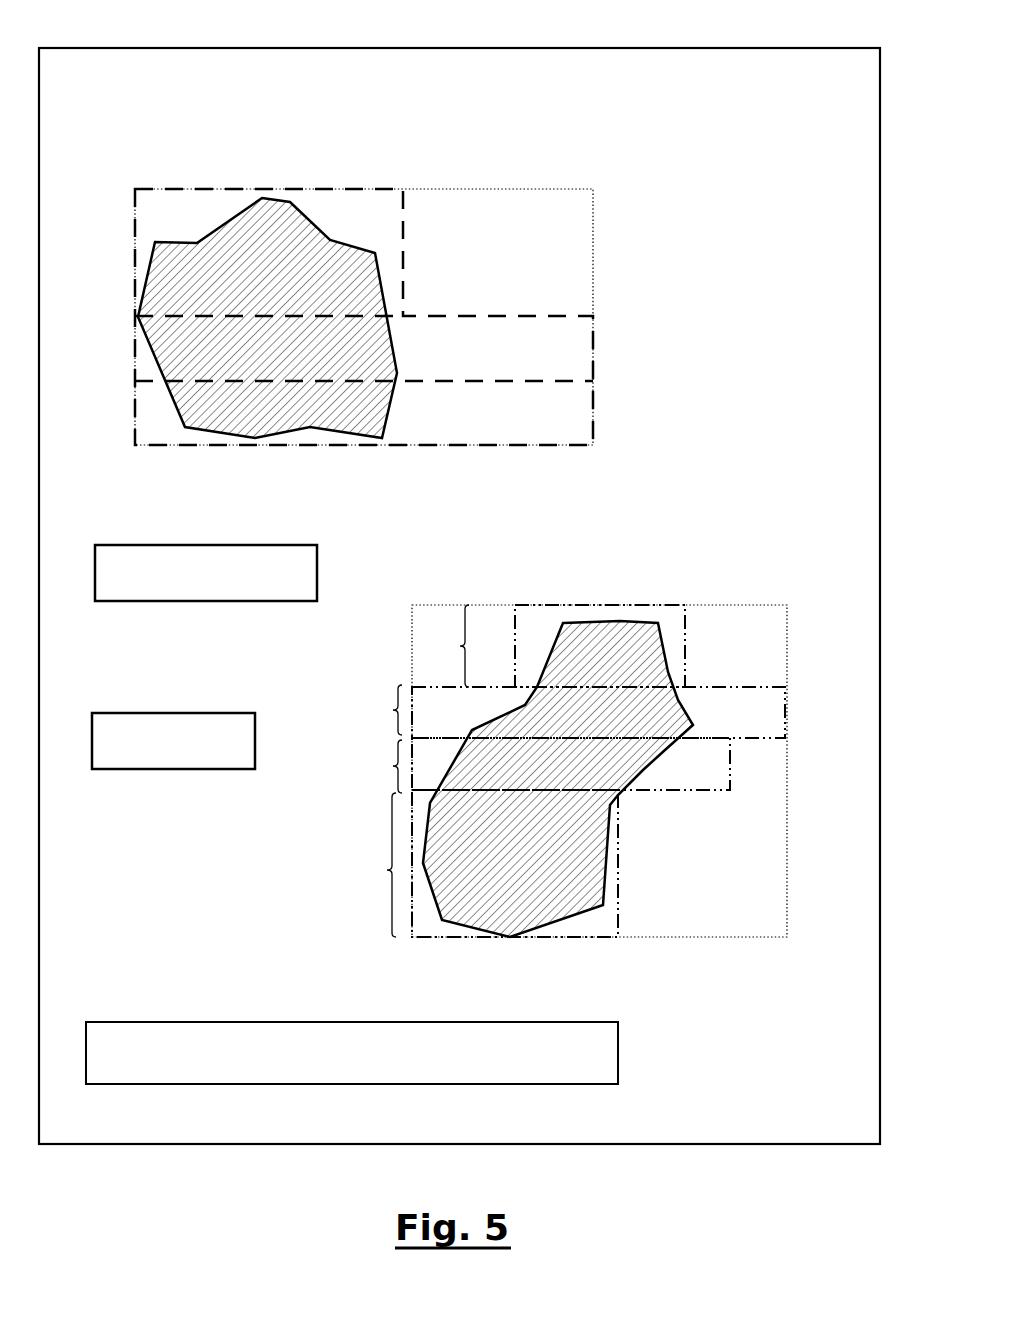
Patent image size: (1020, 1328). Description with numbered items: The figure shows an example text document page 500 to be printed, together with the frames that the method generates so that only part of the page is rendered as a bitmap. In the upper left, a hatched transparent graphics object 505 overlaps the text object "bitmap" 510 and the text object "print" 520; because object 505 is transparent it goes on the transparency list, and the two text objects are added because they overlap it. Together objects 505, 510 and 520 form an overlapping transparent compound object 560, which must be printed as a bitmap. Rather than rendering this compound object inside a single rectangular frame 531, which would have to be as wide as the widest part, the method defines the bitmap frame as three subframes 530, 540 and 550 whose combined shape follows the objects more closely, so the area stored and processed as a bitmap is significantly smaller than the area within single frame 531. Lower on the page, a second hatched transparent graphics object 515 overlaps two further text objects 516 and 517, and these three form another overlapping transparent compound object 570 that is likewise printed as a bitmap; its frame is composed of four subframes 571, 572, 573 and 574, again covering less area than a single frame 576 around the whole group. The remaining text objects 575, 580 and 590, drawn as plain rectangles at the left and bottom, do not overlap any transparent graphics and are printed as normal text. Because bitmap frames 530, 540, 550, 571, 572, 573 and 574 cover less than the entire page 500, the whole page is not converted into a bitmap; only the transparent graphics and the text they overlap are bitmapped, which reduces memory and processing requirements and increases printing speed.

The page 500 is at (488, 48).
The transparent graphics object 505 is at (381, 265).
The text object "bitmap" 510 is at (512, 336).
The transparent graphics object 515 is at (620, 647).
The text object 516 is at (765, 715).
The text object 517 is at (733, 770).
The text object "print" 520 is at (505, 428).
The subframe 530 is at (247, 189).
The single rectangular frame 531 is at (597, 232).
The subframe 540 is at (596, 343).
The subframe 550 is at (596, 414).
The overlapping transparent compound object 560 is at (636, 256).
The overlapping transparent compound object 570 is at (710, 587).
The subframe 571 is at (552, 646).
The subframe 572 is at (392, 766).
The subframe 573 is at (392, 710).
The subframe 574 is at (480, 863).
The text object 575 is at (317, 580).
The single frame 576 is at (750, 940).
The text object 580 is at (255, 740).
The text object 590 is at (160, 1021).